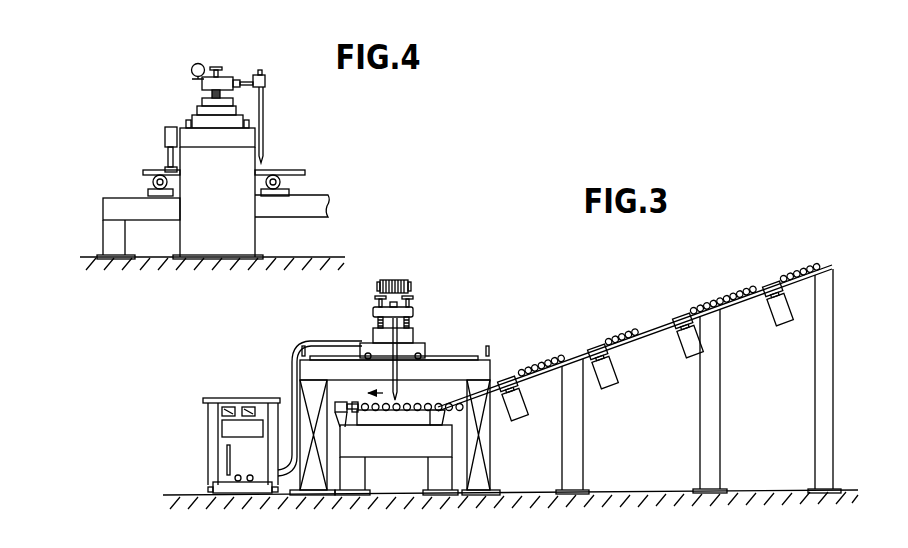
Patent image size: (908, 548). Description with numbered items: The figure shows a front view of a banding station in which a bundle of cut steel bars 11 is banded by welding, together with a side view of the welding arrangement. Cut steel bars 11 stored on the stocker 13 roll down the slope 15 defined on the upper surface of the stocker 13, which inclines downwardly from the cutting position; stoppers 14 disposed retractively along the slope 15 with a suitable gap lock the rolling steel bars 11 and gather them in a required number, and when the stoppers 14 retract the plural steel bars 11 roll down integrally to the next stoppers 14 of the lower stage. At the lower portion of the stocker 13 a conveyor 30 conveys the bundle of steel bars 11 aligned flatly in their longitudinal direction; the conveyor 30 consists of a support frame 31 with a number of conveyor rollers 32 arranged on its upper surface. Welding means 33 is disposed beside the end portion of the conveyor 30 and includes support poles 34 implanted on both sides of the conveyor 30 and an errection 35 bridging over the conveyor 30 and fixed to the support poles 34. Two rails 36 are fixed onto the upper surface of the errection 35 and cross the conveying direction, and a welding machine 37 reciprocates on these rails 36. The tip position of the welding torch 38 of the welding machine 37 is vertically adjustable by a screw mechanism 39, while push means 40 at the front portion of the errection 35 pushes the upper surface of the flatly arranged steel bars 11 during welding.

In FIG. 4, the steel bars 11 is at (295, 170).
In FIG. 3, the steel bars 11 is at (445, 402).
In FIG. 3, the stocker 13 is at (838, 365).
In FIG. 3, the stoppers 14 is at (505, 374).
In FIG. 3, the slope 15 is at (648, 325).
In FIG. 4, the conveyor 30 is at (275, 195).
In FIG. 3, the conveyor 30 is at (425, 421).
In FIG. 4, the support frame 31 is at (315, 212).
In FIG. 3, the support frame 31 is at (351, 486).
In FIG. 4, the conveyor rollers 32 is at (285, 178).
In FIG. 3, the conveyor rollers 32 is at (378, 420).
In FIG. 4, the welding means 33 is at (203, 236).
In FIG. 3, the welding means 33 is at (290, 389).
In FIG. 4, the support poles 34 is at (255, 230).
In FIG. 3, the support poles 34 is at (314, 488).
In FIG. 4, the errection 35 is at (190, 138).
In FIG. 3, the errection 35 is at (420, 368).
In FIG. 4, the rails 36 is at (189, 121).
In FIG. 3, the rails 36 is at (465, 395).
In FIG. 4, the welding machine 37 is at (231, 72).
In FIG. 3, the welding machine 37 is at (411, 310).
In FIG. 4, the welding torch 38 is at (265, 140).
In FIG. 3, the welding torch 38 is at (393, 373).
In FIG. 4, the screw mechanism 39 is at (216, 66).
In FIG. 3, the screw mechanism 39 is at (405, 295).
In FIG. 4, the push means 40 is at (165, 133).